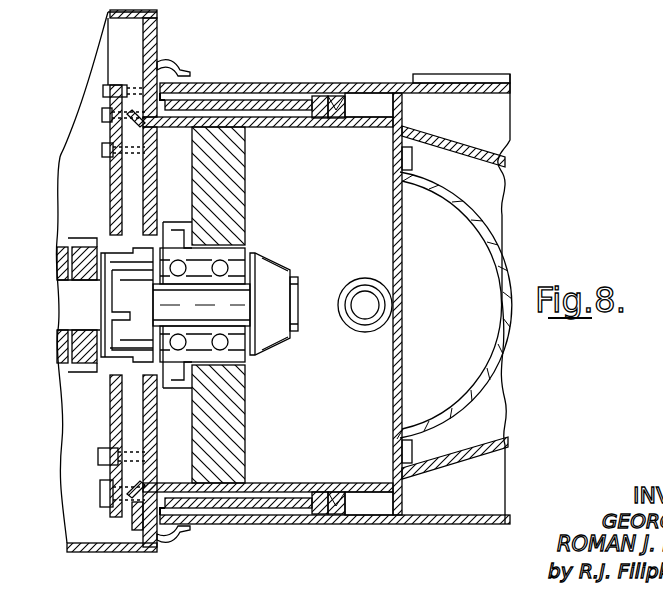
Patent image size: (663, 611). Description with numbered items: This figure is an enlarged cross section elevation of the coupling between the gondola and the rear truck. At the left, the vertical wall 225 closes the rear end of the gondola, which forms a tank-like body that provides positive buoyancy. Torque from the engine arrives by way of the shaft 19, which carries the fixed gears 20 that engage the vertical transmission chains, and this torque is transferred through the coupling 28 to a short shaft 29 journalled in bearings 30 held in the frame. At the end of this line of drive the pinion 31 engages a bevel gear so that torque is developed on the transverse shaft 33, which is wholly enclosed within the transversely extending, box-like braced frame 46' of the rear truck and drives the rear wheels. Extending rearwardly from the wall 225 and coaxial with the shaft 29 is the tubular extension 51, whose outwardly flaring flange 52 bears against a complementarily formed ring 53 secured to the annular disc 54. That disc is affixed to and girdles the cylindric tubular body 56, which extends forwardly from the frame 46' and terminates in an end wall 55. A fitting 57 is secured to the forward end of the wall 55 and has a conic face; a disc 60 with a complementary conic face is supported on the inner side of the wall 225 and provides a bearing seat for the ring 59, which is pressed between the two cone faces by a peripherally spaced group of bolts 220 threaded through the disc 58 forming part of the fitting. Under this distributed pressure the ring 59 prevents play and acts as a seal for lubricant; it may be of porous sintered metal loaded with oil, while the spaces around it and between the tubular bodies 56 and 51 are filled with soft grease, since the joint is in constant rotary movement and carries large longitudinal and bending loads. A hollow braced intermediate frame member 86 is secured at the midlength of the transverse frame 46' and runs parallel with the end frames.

The shaft 19 is at (62, 305).
The gears 20 is at (73, 248).
The coupling 28 is at (107, 363).
The short shaft 29 is at (250, 254).
The bearings 30 is at (243, 360).
The pinion 31 is at (278, 334).
The transverse shaft 33 is at (355, 283).
The rear truck transverse frame 46' is at (336, 270).
The tubular extension 51 is at (237, 104).
The outwardly flaring flange 52 is at (312, 104).
The ring 53 is at (327, 100).
The annular disc 54 is at (351, 100).
The end wall 55 is at (148, 417).
The cylindric tubular body 56 is at (293, 128).
The fitting 57 is at (145, 133).
The disc 58 is at (100, 457).
The ring 59 is at (127, 128).
The disc 60 is at (148, 80).
The intermediate end frame member 86 is at (502, 150).
The bolts 220 is at (103, 114).
The vertical wall 225 is at (157, 50).